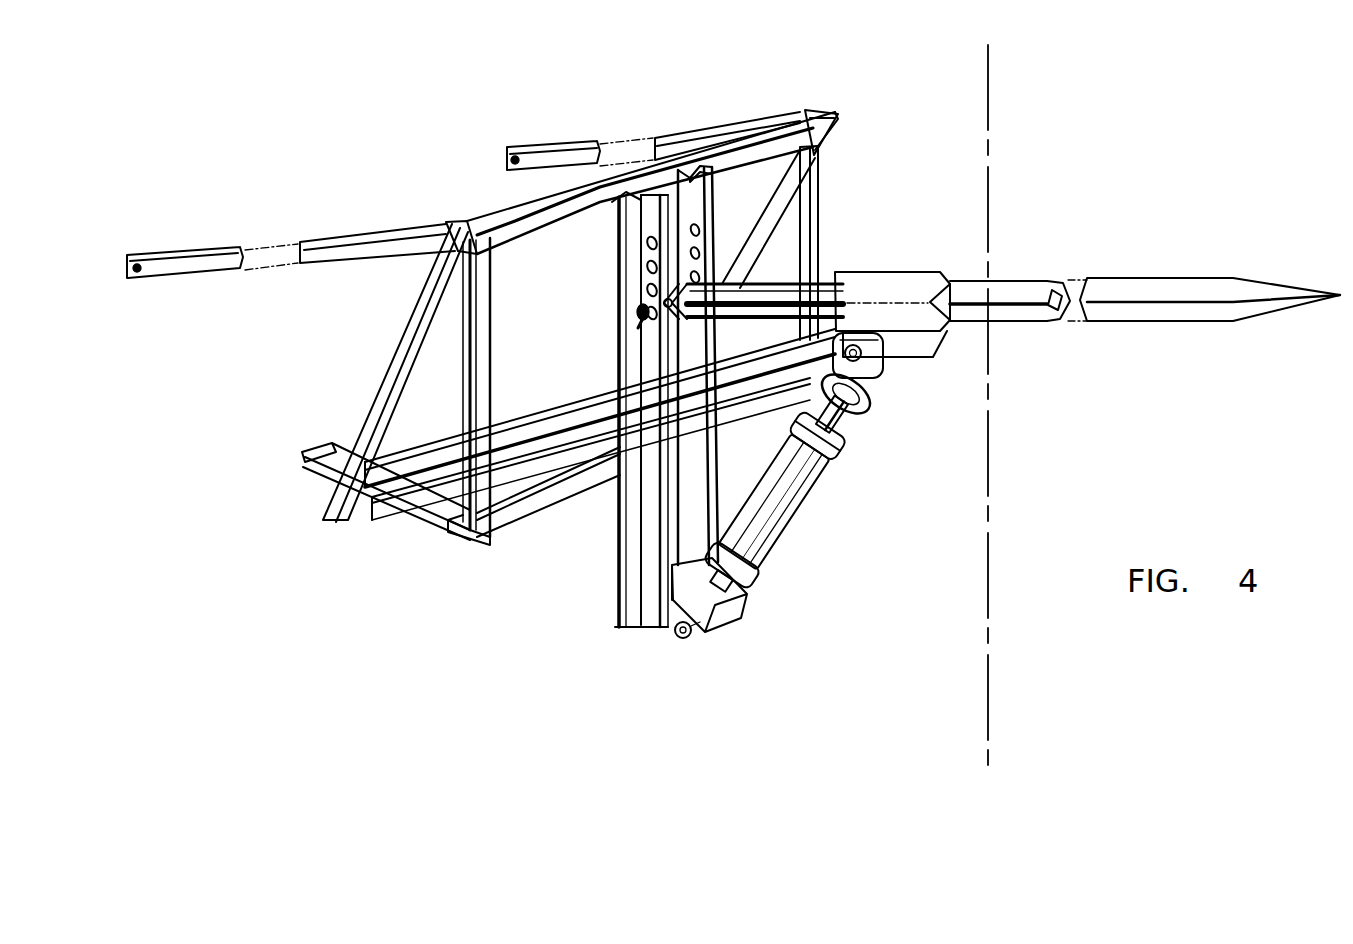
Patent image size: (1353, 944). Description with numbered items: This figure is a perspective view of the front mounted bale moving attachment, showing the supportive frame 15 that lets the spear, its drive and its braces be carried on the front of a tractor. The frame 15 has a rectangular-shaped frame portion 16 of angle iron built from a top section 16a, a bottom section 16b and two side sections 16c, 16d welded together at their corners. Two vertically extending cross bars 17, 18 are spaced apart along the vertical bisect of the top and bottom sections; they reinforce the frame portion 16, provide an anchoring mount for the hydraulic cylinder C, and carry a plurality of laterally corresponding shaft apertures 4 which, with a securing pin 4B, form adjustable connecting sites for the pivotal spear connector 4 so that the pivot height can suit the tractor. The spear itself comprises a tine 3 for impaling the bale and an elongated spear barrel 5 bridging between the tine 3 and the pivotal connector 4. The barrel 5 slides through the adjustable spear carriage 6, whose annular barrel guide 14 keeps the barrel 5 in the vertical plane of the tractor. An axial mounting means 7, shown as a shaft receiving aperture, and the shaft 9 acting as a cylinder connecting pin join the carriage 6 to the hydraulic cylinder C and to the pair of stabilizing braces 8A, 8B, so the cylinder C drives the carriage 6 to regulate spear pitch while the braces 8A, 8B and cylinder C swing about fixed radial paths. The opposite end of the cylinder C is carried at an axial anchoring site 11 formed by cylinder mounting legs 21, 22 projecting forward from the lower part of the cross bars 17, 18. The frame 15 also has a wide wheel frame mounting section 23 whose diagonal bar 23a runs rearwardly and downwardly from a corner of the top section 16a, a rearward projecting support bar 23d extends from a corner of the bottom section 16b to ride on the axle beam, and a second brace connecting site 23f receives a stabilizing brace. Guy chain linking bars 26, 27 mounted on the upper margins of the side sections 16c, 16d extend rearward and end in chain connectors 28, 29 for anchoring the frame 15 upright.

The tine 3 is at (1262, 290).
The pivotal spear connector 4 is at (666, 297).
The securing pin 4B is at (638, 320).
The spear barrel 5 is at (1003, 50).
The adjustable spear carriage 6 is at (948, 343).
The axial mounting means 7 is at (878, 380).
The stabilizing brace 8A is at (775, 300).
The stabilizing brace 8B is at (580, 400).
The shaft 9 is at (855, 405).
The axial anchoring site 11 is at (664, 648).
The barrel guide 14 is at (905, 272).
The supportive frame 15 is at (788, 103).
The rectangular-shaped frame portion 16 is at (463, 557).
The top section 16a is at (495, 215).
The bottom section 16b is at (560, 490).
The side section 16c is at (810, 207).
The side section 16d is at (483, 347).
The cross bar 17 is at (742, 152).
The cross bar 18 is at (617, 237).
The cylinder mounting leg 21 is at (750, 598).
The cylinder mounting leg 22 is at (715, 630).
The wide wheel frame mounting section 23 is at (293, 469).
The diagonal bar 23a is at (832, 140).
The rearward projecting support bar 23d is at (413, 497).
The second brace connecting site 23f is at (387, 357).
The guy chain linking bar 26 is at (573, 143).
The guy chain linking bar 27 is at (217, 247).
The chain connector 28 is at (510, 160).
The chain connector 29 is at (132, 267).
The hydraulic cylinder C is at (800, 515).